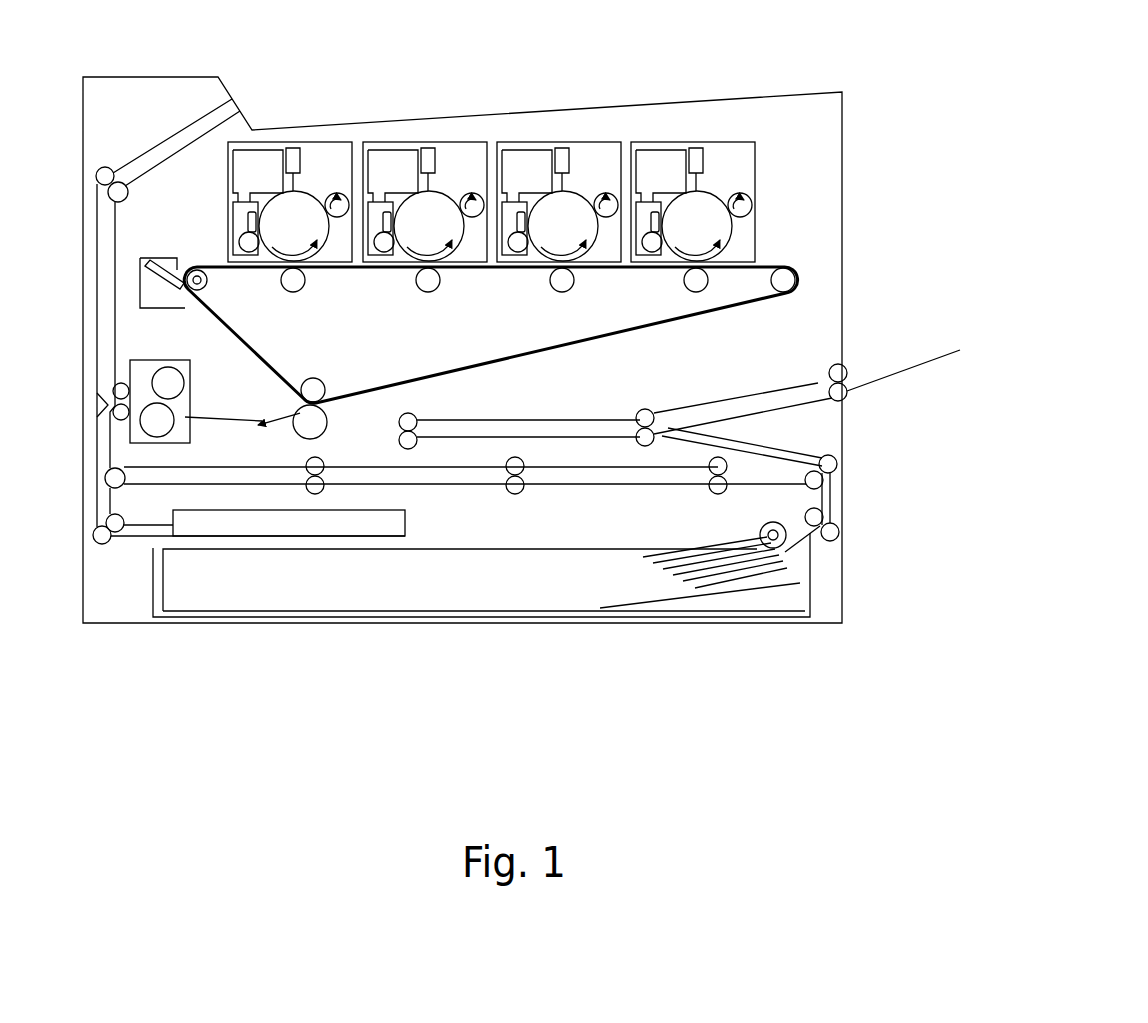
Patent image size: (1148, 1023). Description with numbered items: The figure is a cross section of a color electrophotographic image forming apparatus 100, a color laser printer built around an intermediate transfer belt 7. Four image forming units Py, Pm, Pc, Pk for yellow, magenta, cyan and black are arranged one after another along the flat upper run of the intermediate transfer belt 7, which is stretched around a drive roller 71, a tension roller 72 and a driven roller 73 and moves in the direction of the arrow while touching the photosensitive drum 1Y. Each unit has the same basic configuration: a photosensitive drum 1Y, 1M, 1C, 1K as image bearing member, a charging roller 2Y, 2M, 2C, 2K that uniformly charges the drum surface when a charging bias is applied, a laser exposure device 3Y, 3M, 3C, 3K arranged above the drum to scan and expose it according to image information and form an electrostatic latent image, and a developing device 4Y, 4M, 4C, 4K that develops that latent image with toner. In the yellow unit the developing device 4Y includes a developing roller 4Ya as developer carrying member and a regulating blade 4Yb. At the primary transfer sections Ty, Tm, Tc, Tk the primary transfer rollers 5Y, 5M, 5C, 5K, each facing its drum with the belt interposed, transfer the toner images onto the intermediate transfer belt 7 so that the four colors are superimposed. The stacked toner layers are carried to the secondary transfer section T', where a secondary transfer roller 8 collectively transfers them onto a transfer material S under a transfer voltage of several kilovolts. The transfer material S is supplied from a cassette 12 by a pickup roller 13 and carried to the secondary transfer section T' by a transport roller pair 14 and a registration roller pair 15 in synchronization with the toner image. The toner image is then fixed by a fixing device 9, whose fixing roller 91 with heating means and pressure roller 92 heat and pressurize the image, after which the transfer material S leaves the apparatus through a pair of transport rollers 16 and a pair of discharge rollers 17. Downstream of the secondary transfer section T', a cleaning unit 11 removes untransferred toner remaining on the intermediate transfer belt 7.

The electrophotographic image forming apparatus 100 is at (784, 89).
The yellow image forming unit Py is at (285, 141).
The magenta image forming unit Pm is at (417, 141).
The cyan image forming unit Pc is at (552, 141).
The black image forming unit Pk is at (686, 141).
The photosensitive drum 1Y is at (312, 262).
The electrophotographic photosensitive member 1M is at (445, 262).
The electrophotographic photosensitive member 1C is at (580, 262).
The electrophotographic photosensitive member 1K is at (716, 262).
The charging roller 2Y is at (338, 193).
The charging roller 2M is at (472, 193).
The charging roller 2C is at (606, 193).
The charging roller 2K is at (740, 193).
The laser exposure device 3Y is at (301, 150).
The laser exposure device 3M is at (436, 150).
The laser exposure device 3C is at (570, 150).
The laser exposure device 3K is at (703, 150).
The developing device 4Y is at (233, 210).
The developing roller 4Ya is at (239, 243).
The regulating blade 4Yb is at (247, 218).
The developing device 4M is at (377, 263).
The developing device 4C is at (512, 263).
The developing device 4K is at (647, 263).
The primary transfer roller 5Y is at (295, 292).
The primary transfer roller 5M is at (430, 292).
The primary transfer roller 5C is at (565, 292).
The primary transfer roller 5K is at (700, 292).
The primary transfer section Ty is at (278, 285).
The primary transfer section Tm is at (411, 287).
The primary transfer section Tc is at (546, 287).
The primary transfer section Tk is at (680, 285).
The intermediate transfer belt 7 is at (605, 372).
The drive roller 71 is at (219, 292).
The tension roller 72 is at (788, 295).
The driven roller 73 is at (322, 386).
The secondary transfer roller 8 is at (297, 427).
The secondary transfer section T' is at (343, 405).
The fixing device 9 is at (161, 359).
The fixing roller 91 is at (186, 381).
The pressure roller 92 is at (190, 422).
The cleaning unit 11 is at (157, 262).
The cassette 12 is at (777, 608).
The pickup roller 13 is at (770, 522).
The transport roller pair 14 is at (840, 535).
The registration roller pair 15 is at (416, 418).
The pair of transport rollers 16 is at (100, 395).
The pair of discharge rollers 17 is at (130, 193).
The transfer material S is at (676, 560).